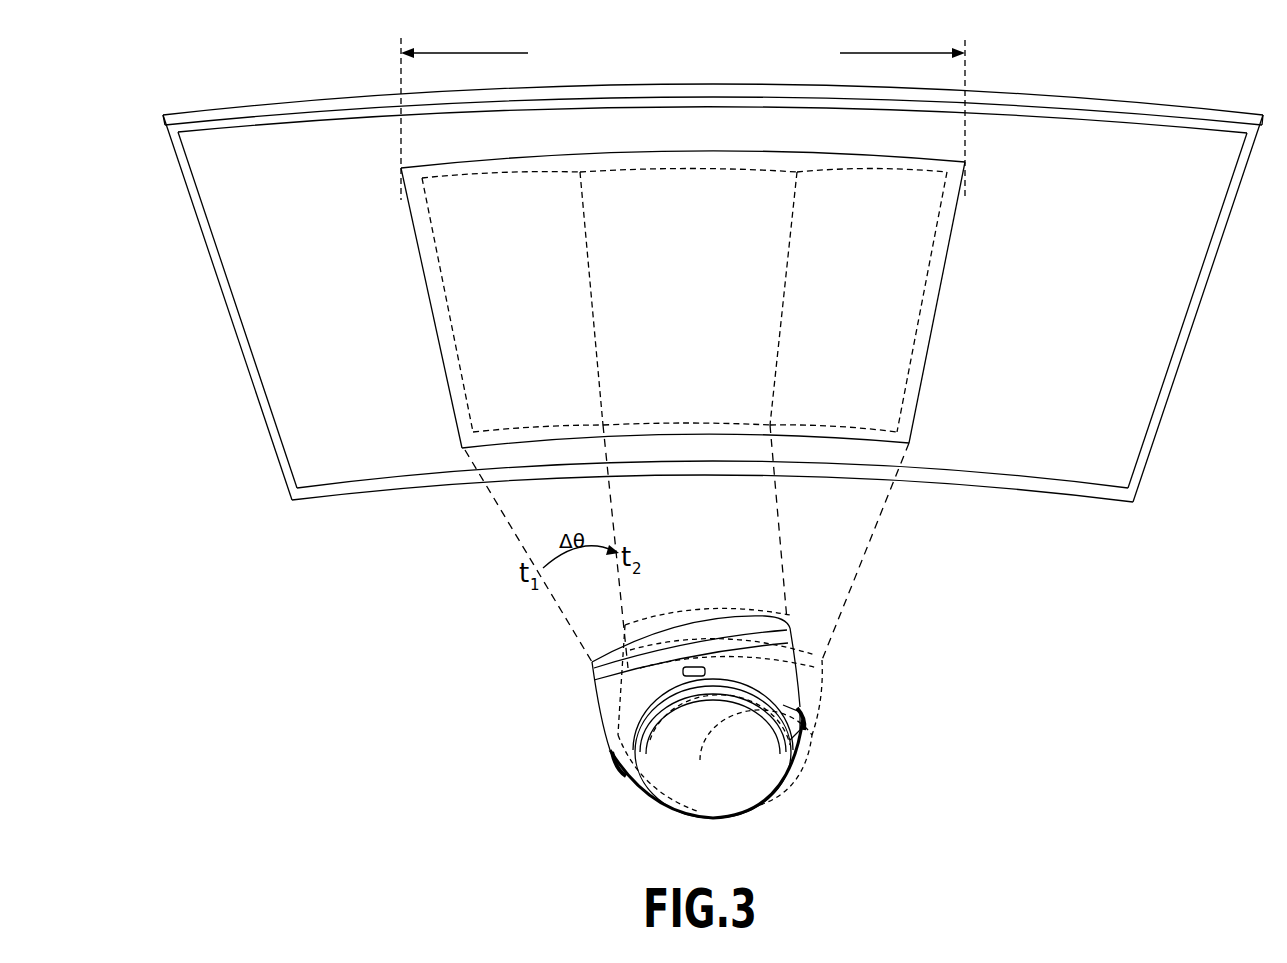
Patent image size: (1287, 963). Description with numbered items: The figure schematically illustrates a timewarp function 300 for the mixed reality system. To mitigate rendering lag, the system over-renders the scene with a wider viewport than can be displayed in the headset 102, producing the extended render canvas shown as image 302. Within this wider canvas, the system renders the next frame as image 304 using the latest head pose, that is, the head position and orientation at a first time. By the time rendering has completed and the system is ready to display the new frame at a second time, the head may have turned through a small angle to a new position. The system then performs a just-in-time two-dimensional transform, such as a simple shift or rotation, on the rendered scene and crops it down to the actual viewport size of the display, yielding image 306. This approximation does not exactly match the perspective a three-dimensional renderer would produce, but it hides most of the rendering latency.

The display system / scene 300 is at (157, 50).
The image 302 is at (873, 160).
The image 304 is at (457, 173).
The image 306 is at (912, 172).
The headset 102 is at (596, 703).